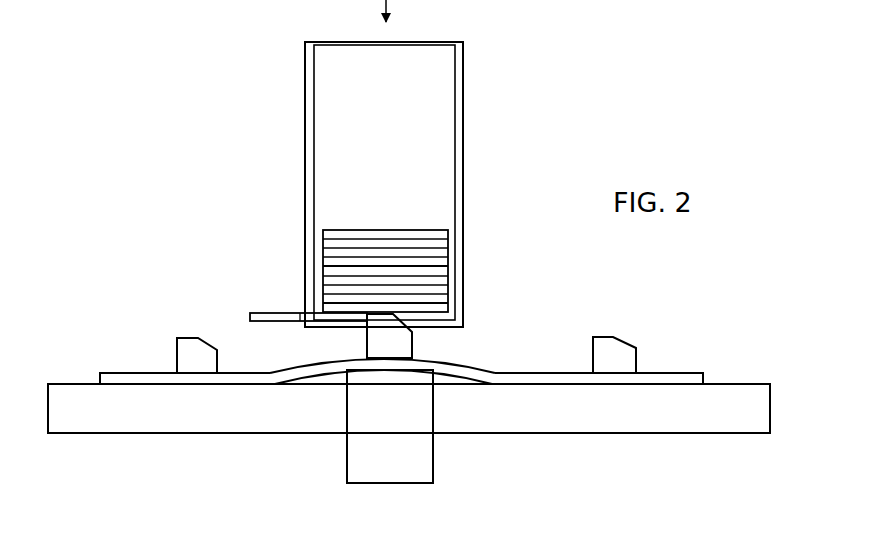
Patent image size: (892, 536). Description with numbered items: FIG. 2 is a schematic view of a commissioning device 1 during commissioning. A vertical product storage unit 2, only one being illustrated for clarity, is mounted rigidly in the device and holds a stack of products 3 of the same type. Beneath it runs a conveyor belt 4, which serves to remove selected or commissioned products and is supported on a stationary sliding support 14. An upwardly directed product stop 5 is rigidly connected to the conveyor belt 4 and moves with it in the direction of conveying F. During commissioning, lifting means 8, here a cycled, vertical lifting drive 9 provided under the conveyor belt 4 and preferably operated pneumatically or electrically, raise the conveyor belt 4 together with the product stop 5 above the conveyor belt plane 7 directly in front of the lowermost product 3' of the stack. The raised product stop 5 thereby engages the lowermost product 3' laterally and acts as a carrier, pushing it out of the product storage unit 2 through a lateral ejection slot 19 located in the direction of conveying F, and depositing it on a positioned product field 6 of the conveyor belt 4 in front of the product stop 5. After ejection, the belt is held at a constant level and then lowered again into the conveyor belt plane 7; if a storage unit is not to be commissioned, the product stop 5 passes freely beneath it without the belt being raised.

The commissioning device 1 is at (616, 140).
The product storage unit 2 is at (465, 150).
The product 3 is at (419, 243).
The lowermost product 3' is at (291, 282).
The lateral ejection slot 19 is at (300, 312).
The conveyor belt 4 is at (112, 373).
The product stop 5 is at (182, 352).
The product field 6 is at (252, 373).
The conveyor belt plane 7 is at (723, 382).
The lifting means 8 is at (290, 469).
The vertical lifting drive 9 is at (402, 468).
The sliding support 14 is at (183, 427).
The direction of conveying F is at (128, 197).